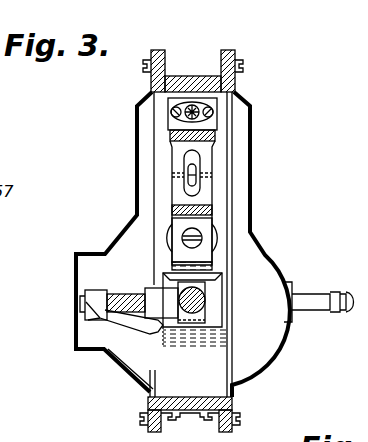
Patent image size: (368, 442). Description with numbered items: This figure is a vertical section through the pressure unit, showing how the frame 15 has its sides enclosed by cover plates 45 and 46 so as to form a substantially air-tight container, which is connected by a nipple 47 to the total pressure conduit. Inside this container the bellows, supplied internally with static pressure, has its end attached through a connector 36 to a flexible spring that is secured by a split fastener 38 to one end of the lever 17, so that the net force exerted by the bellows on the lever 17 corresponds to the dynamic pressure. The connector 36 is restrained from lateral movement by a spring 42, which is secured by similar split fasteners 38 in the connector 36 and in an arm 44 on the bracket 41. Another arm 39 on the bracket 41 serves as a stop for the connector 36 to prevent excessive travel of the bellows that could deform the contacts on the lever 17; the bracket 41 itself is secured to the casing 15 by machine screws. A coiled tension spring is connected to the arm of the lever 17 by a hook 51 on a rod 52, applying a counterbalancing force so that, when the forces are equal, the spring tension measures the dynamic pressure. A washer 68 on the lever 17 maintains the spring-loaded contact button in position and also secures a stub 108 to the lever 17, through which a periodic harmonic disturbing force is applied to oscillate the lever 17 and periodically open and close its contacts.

The frame 15 is at (180, 76).
The lever 17 is at (212, 216).
The connector 36 is at (212, 298).
The split fastener 38 is at (85, 298).
The arm 39 is at (216, 280).
The bracket 41 is at (228, 347).
The spring 42 is at (128, 294).
The arm 44 is at (92, 335).
The cover plate 45 is at (137, 152).
The cover plate 46 is at (253, 156).
The nipple 47 is at (310, 312).
The hook 51 is at (190, 178).
The rod 52 is at (197, 181).
The washer 68 is at (166, 100).
The stub 108 is at (210, 125).